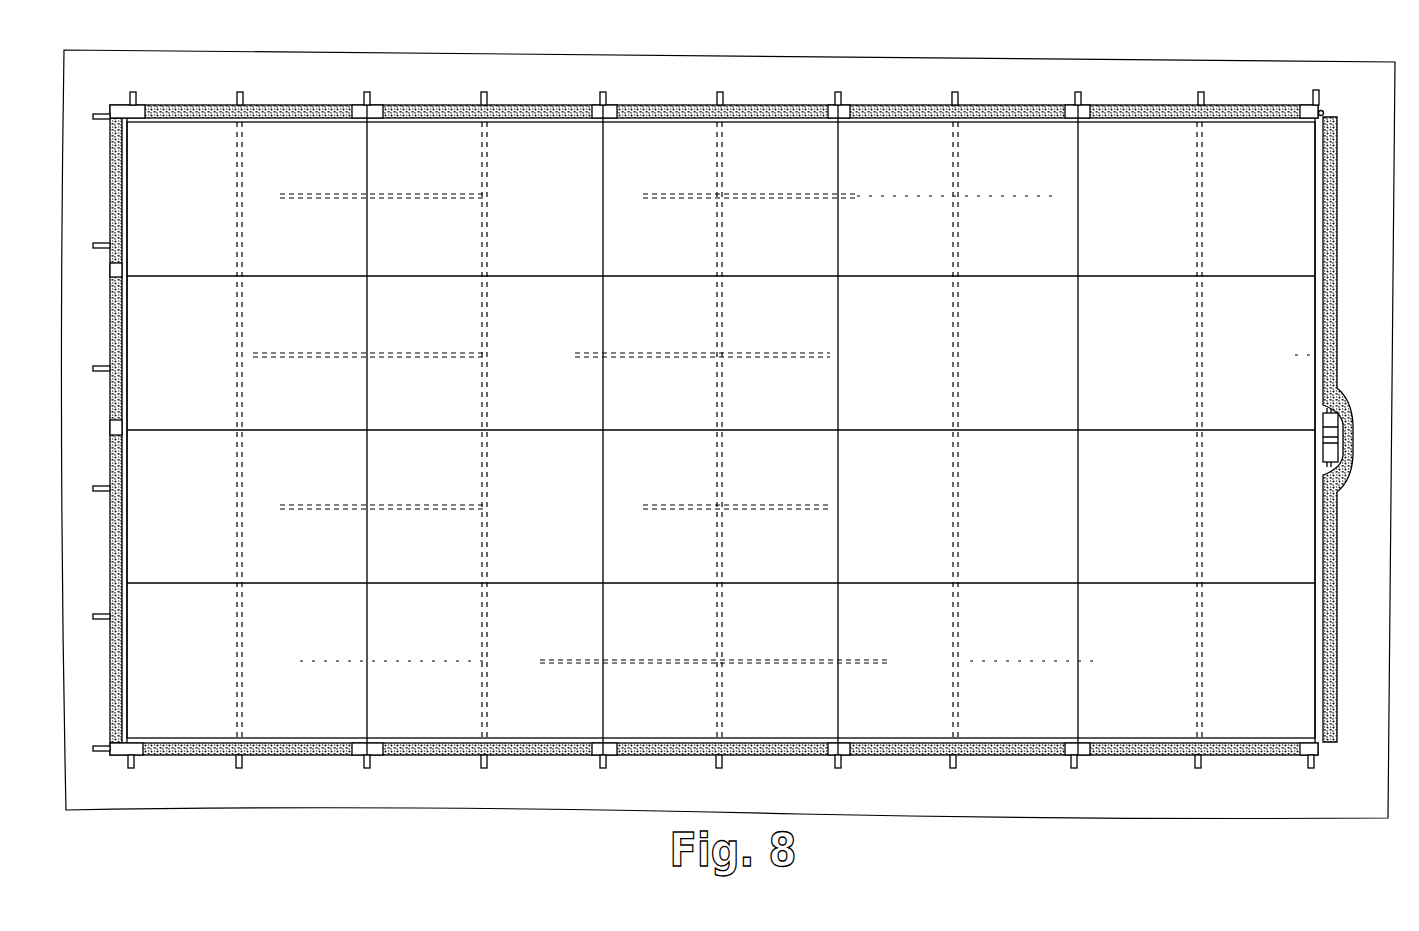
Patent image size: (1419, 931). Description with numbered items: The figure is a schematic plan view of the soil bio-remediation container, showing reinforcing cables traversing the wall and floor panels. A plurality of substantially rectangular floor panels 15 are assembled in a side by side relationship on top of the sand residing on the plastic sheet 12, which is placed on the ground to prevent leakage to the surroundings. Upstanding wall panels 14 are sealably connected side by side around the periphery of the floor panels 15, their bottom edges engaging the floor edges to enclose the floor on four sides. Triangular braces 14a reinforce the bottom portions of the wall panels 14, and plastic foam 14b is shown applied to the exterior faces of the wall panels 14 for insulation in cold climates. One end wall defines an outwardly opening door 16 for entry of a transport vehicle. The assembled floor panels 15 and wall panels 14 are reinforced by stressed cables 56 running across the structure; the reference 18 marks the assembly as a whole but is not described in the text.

The plastic sheet 12 is at (1086, 811).
The wall panels 14 is at (752, 736).
The triangular braces 14a is at (368, 96).
The plastic foam 14b is at (510, 107).
The floor panels 15 is at (1144, 713).
The door 16 is at (1317, 303).
The assembly 18 is at (1345, 93).
The stressed cables 56 is at (784, 434).